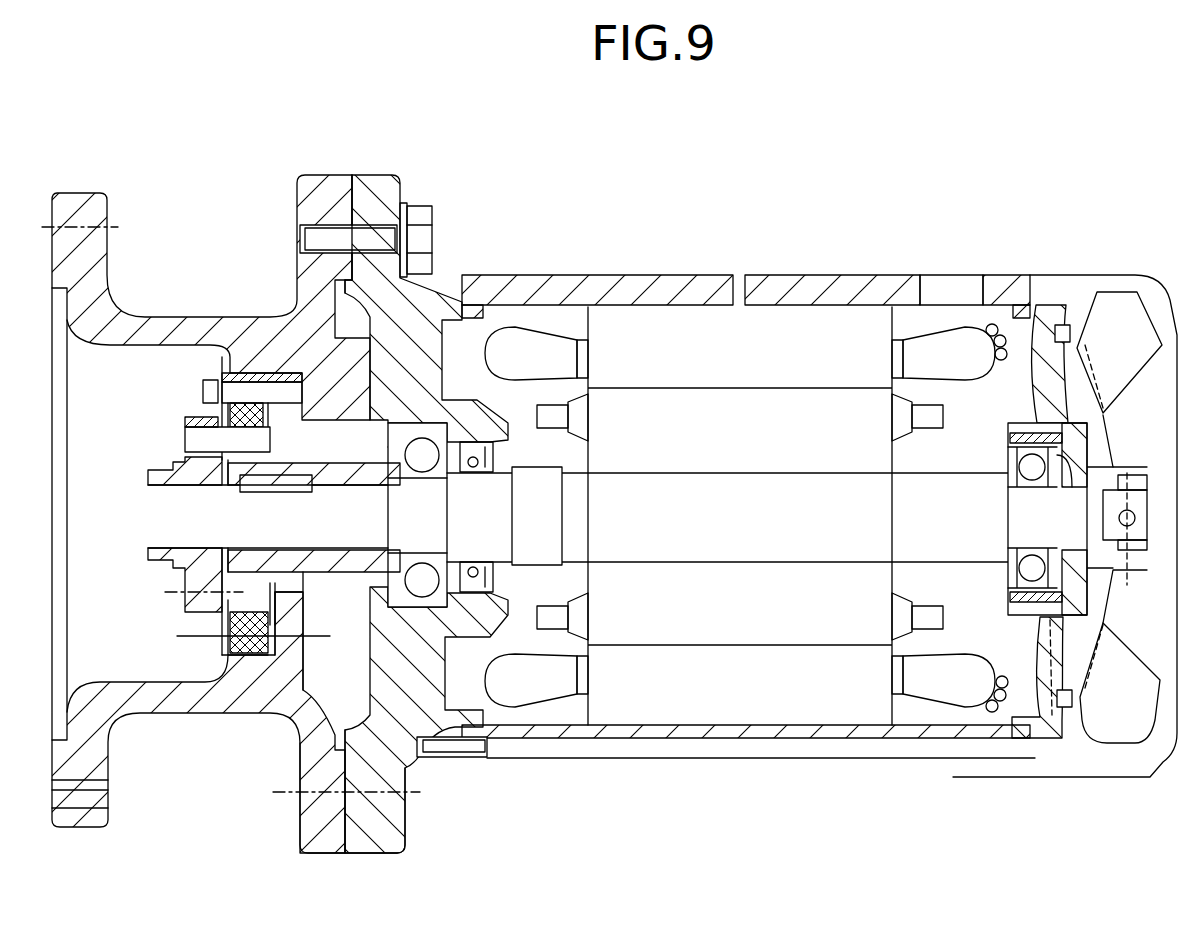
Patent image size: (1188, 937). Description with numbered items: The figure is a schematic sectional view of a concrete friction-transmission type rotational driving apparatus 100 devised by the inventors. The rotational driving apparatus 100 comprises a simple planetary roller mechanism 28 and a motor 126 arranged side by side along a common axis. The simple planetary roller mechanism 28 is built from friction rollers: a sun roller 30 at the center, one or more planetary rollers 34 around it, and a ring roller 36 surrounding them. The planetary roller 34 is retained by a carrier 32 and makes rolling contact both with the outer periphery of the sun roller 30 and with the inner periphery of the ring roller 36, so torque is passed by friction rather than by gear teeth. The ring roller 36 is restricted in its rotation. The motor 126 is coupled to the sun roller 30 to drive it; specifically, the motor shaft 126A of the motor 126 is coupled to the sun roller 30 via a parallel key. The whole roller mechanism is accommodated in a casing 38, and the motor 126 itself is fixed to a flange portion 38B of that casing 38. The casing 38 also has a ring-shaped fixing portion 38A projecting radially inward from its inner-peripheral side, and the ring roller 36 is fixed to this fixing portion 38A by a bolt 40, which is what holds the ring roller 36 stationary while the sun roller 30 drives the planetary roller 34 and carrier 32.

The simple planetary roller mechanism 28 is at (151, 598).
The sun roller 30 is at (318, 538).
The carrier 32 is at (152, 470).
The planetary roller 34 is at (265, 455).
The ring roller 36 is at (230, 365).
The casing 38 is at (153, 708).
The fixing portion 38A is at (293, 615).
The flange portion 38B is at (320, 838).
The bolt 40 is at (203, 406).
The rotational driving apparatus 100 is at (738, 190).
The motor 126 is at (893, 260).
The motor shaft 126A is at (413, 767).